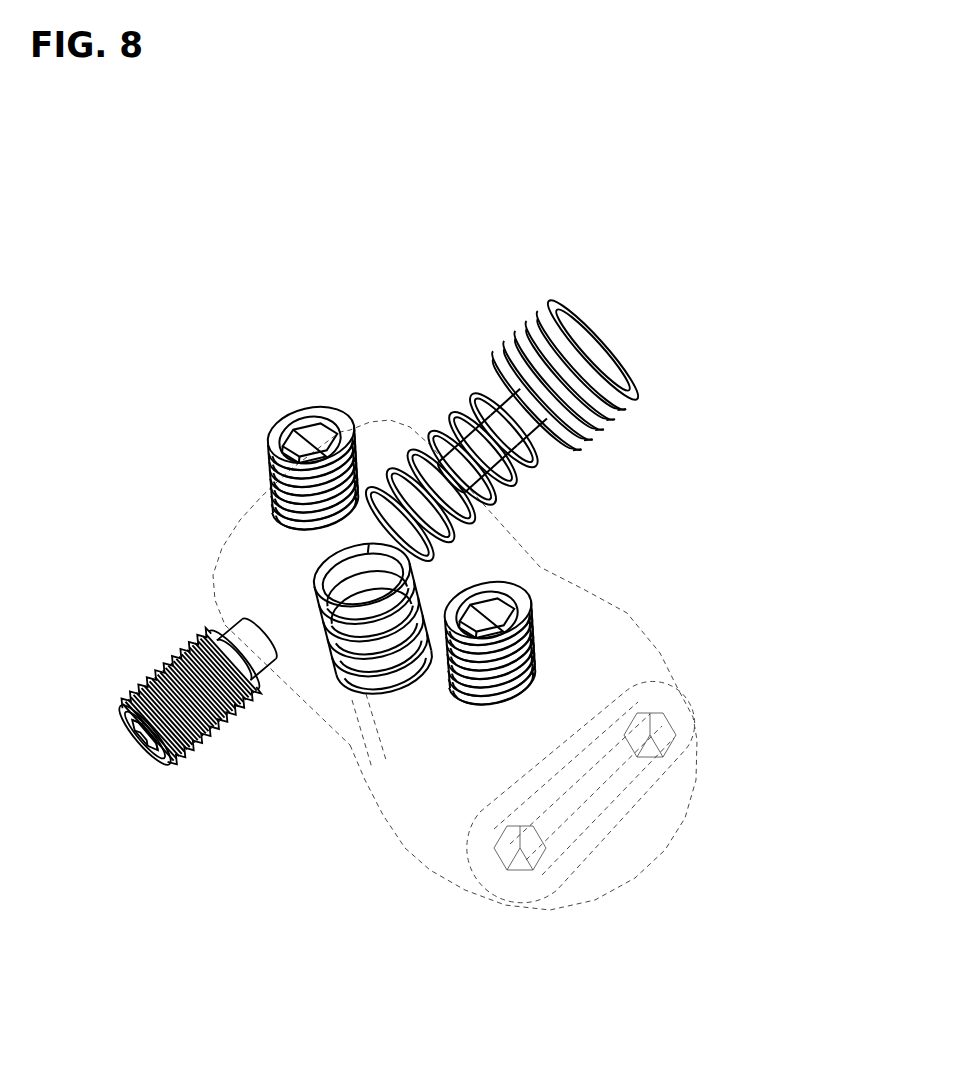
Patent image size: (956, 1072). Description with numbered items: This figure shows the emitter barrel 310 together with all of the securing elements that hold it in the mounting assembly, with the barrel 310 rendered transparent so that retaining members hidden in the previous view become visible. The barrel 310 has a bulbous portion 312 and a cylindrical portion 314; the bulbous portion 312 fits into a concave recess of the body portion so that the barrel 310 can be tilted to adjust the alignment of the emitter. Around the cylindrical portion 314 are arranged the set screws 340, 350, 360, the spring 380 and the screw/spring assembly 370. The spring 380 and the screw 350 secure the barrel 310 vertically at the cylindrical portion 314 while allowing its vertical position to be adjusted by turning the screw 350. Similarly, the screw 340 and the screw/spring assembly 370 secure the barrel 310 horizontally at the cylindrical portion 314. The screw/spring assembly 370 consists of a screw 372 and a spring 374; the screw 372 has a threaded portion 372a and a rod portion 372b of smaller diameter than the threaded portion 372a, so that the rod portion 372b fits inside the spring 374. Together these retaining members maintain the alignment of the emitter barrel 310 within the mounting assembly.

The emitter barrel 310 is at (657, 820).
The bulbous portion 312 is at (408, 850).
The cylindrical portion 314 is at (308, 703).
The set screw 340 is at (163, 665).
The set screw 350 is at (282, 430).
The set screw 360 is at (513, 603).
The screw/spring assembly 370 is at (467, 348).
The screw 372 is at (598, 338).
The threaded portion 372a is at (597, 432).
The rod portion 372b is at (522, 440).
The spring 374 is at (450, 408).
The spring 380 is at (360, 660).